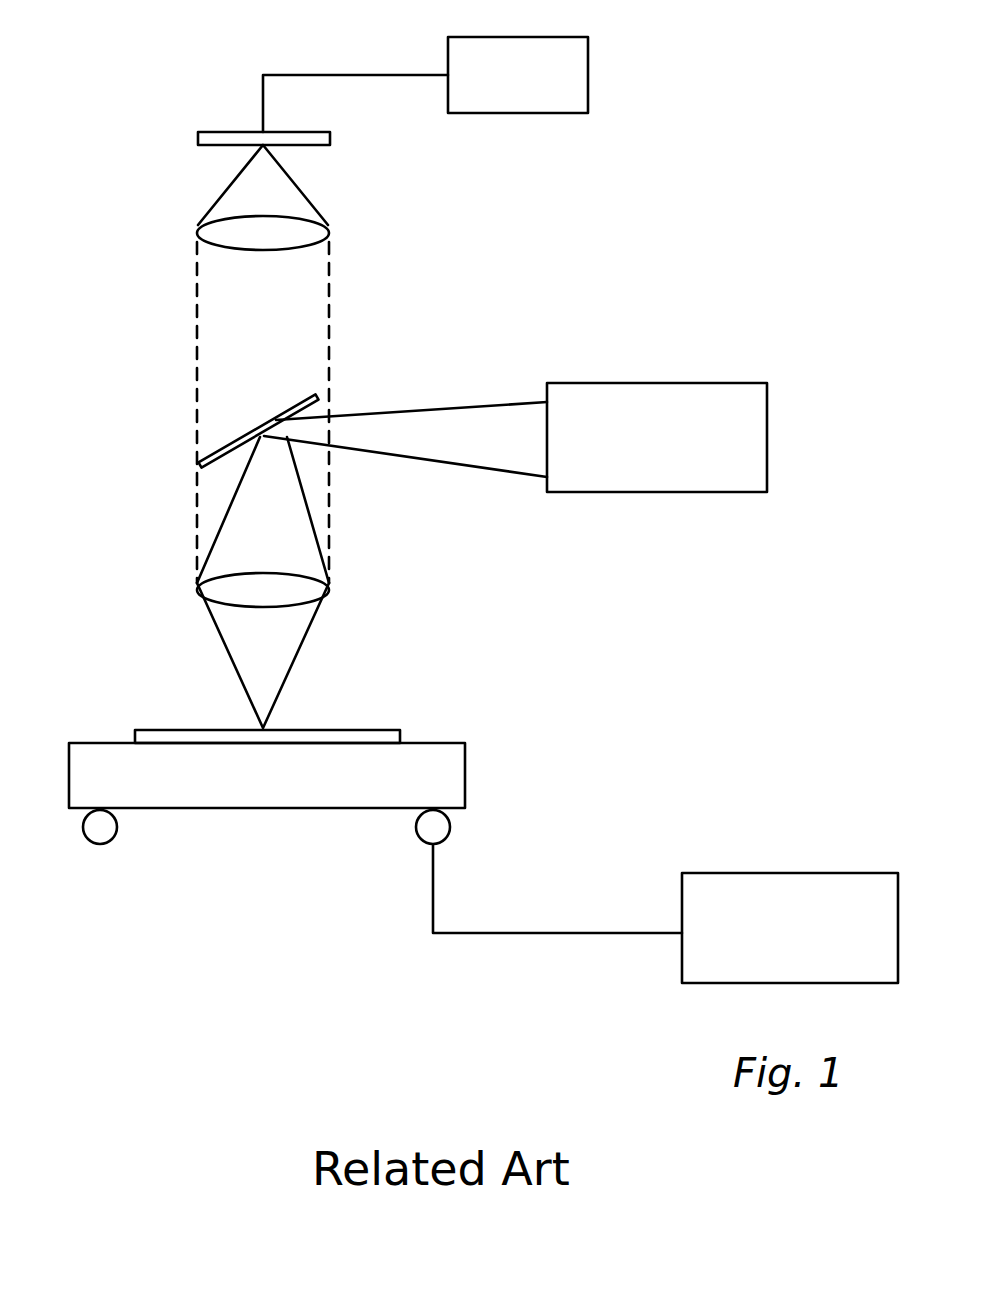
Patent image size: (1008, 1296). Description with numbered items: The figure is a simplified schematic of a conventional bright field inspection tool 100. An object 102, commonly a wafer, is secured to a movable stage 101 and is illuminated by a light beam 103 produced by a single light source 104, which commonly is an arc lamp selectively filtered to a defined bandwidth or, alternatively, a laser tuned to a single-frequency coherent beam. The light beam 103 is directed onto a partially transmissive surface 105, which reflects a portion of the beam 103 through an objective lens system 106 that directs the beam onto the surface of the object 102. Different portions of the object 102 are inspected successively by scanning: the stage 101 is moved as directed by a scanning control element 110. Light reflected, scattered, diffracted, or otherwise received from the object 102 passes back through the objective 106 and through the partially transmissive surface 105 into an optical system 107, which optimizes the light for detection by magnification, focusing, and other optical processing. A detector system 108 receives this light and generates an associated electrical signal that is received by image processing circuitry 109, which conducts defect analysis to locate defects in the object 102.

The bright field inspection tool 100 is at (560, 186).
The movable stage 101 is at (482, 842).
The object 102 is at (312, 710).
The light beam 103 is at (427, 447).
The light source 104 is at (631, 452).
The partially transmissive surface 105 is at (216, 430).
The objective lens system 106 is at (303, 575).
The optical system 107 is at (303, 222).
The detector system 108 is at (211, 120).
The image processing circuitry 109 is at (492, 87).
The scanning control element 110 is at (764, 942).